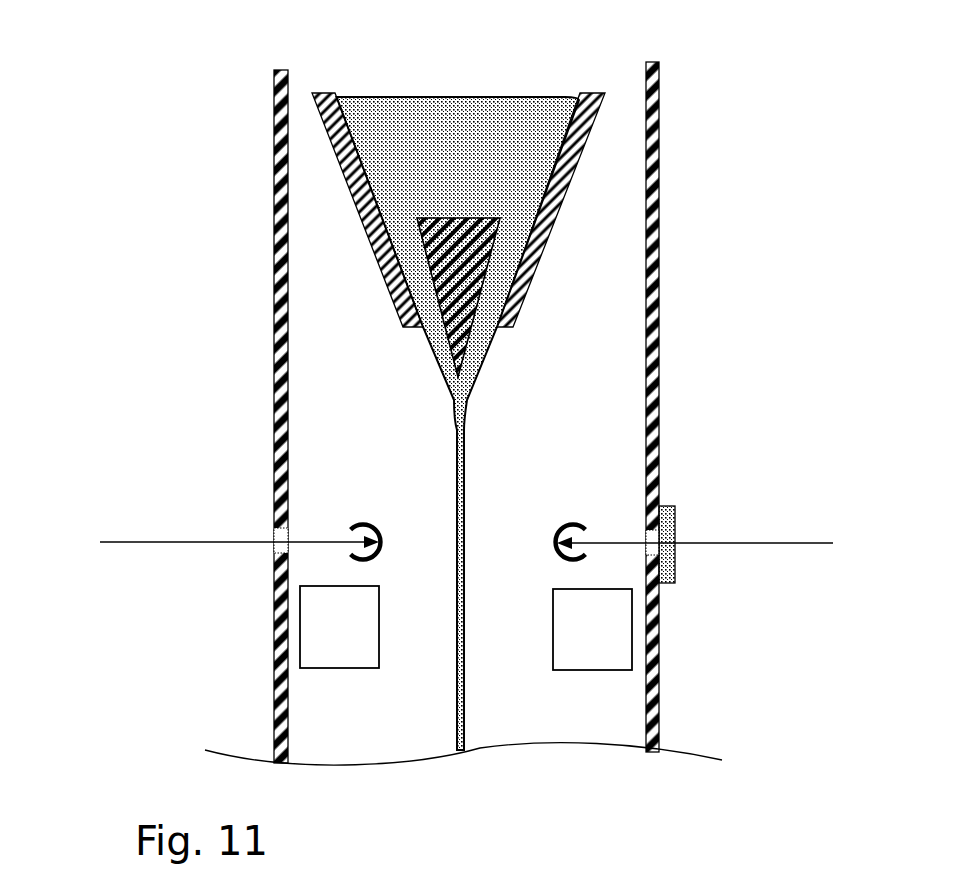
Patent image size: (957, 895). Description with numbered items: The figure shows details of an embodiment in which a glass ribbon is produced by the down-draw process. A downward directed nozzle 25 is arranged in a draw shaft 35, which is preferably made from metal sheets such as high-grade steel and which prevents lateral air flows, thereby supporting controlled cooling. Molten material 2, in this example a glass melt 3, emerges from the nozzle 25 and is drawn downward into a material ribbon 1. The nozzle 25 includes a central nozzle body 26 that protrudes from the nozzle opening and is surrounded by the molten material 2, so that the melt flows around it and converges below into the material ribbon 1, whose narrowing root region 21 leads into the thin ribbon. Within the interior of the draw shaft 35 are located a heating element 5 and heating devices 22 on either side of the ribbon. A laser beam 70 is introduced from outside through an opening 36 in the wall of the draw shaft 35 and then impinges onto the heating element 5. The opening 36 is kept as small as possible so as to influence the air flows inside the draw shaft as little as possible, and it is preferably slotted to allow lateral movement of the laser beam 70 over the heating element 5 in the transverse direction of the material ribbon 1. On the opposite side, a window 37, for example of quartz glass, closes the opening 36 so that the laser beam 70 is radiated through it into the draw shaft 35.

The material ribbon 1 is at (457, 690).
The molten material 2 is at (458, 378).
The glass melt 3 is at (428, 110).
The heating element 5 is at (342, 530).
The drawing onion / root of strip 21 is at (456, 388).
The heating devices 22 is at (300, 629).
The nozzle 25 is at (428, 364).
The central nozzle body 26 is at (445, 335).
The draw shaft 35 is at (175, 416).
The opening 36 is at (275, 535).
The window 37 is at (675, 563).
The laser beam 70 is at (130, 543).